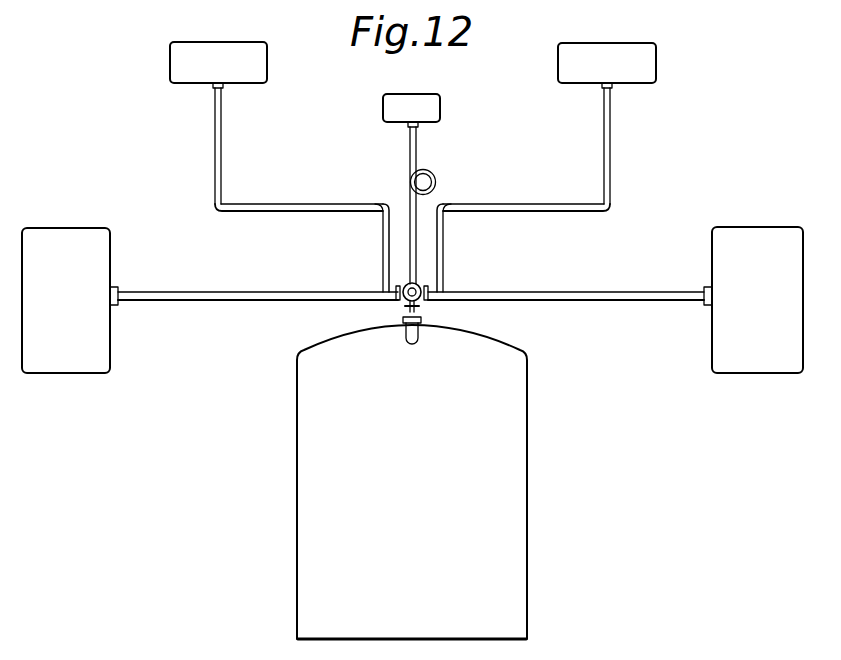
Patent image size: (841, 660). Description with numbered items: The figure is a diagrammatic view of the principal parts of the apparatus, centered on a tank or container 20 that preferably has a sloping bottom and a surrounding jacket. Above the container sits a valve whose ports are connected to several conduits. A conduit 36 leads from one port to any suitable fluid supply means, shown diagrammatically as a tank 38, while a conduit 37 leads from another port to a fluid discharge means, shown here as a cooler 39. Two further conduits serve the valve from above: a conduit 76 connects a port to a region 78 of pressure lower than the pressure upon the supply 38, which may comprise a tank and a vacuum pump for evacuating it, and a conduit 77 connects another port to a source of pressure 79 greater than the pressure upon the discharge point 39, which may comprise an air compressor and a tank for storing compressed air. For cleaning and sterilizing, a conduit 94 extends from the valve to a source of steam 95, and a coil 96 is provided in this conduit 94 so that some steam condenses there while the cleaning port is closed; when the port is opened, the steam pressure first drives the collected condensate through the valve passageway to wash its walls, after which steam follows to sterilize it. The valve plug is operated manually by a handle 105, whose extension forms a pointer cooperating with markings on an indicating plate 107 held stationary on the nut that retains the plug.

The tank or container 20 is at (538, 473).
The conduit 36 is at (182, 294).
The conduit 37 is at (597, 293).
The fluid supply means 38 is at (93, 233).
The cooler 39 is at (756, 226).
The conduit 76 is at (213, 124).
The conduit 77 is at (612, 136).
The region of lower pressure 78 is at (168, 70).
The source of pressure 79 is at (656, 68).
The conduit 94 is at (409, 150).
The source of steam 95 is at (441, 108).
The coil 96 is at (436, 176).
The handle 105 is at (422, 312).
The indicating plate 107 is at (423, 283).